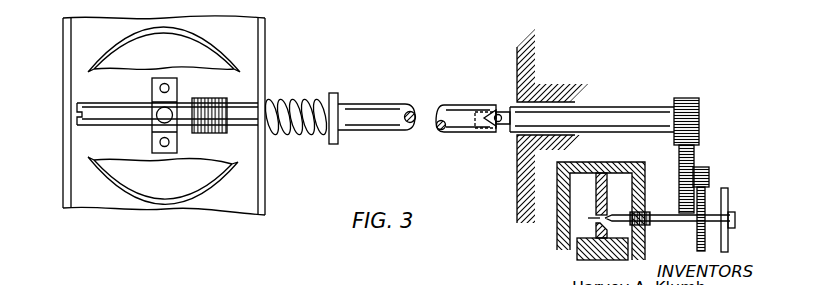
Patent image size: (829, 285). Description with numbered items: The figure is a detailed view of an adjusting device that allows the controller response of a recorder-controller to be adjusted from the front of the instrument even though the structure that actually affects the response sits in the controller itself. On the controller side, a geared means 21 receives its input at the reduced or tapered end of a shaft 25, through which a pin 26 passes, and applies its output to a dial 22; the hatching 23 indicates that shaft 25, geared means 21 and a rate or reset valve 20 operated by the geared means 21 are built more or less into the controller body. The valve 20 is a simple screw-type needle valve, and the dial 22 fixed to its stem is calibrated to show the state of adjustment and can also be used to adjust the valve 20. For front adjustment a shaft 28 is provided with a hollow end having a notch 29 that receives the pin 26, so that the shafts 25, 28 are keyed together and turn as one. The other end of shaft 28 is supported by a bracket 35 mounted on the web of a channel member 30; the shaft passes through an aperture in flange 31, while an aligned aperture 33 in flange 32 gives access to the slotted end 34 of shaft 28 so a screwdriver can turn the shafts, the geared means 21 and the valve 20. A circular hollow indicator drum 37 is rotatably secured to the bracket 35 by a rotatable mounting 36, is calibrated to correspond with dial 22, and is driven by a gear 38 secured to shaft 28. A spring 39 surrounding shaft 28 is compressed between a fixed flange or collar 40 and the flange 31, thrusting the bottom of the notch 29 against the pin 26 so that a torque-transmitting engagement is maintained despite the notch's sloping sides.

The rate or reset valve 20 is at (673, 215).
The geared means 21 is at (693, 155).
The dial 22 is at (727, 192).
The hatching 23 is at (533, 214).
The shaft 25 is at (607, 105).
The pin 26 is at (493, 133).
The shaft 28 is at (393, 103).
The notch 29 is at (492, 114).
The channel member 30 is at (148, 212).
The flange 31 is at (267, 183).
The flange 32 is at (63, 185).
The aperture 33 is at (67, 126).
The slotted end 34 is at (77, 115).
The bracket 35 is at (152, 143).
The rotatable mounting 36 is at (158, 110).
The indicator drum 37 is at (217, 43).
The gear 38 is at (215, 135).
The spring 39 is at (282, 90).
The fixed flange or collar 40 is at (335, 93).